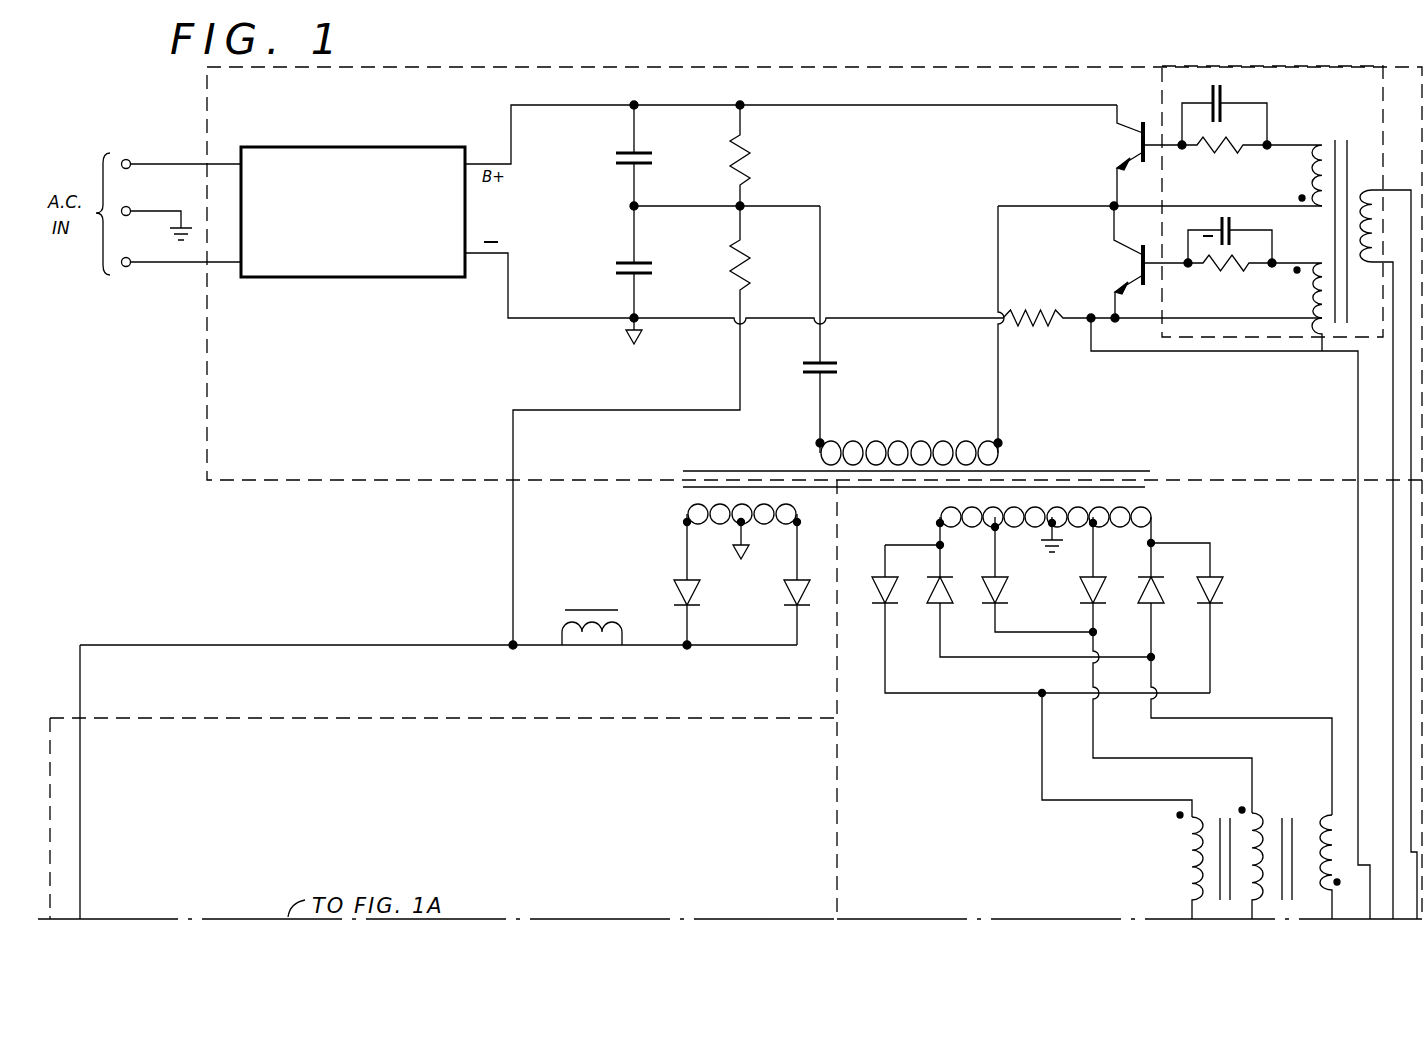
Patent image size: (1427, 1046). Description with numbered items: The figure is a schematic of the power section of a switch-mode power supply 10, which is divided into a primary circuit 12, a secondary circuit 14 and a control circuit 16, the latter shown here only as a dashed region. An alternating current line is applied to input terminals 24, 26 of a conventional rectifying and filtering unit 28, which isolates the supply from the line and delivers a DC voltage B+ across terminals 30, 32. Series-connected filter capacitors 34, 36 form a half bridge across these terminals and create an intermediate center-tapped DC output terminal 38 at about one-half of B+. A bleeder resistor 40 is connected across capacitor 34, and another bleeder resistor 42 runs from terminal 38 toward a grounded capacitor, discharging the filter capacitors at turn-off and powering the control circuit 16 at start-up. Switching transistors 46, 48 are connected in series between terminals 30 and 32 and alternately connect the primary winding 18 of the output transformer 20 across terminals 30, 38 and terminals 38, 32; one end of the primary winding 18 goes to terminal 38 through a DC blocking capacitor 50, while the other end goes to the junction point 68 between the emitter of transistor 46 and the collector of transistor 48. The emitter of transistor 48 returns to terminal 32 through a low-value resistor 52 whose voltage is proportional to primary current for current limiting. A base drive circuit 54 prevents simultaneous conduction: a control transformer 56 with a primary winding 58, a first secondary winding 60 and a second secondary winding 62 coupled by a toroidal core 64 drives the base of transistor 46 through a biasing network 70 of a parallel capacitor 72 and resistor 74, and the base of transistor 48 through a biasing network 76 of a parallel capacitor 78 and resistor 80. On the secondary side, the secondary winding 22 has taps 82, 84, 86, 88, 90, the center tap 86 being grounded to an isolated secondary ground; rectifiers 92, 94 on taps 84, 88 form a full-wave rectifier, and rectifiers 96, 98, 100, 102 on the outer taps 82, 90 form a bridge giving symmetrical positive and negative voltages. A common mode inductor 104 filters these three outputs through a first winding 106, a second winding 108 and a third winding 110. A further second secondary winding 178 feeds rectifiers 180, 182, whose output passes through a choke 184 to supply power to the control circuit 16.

The switch-mode power supply 10 is at (910, 60).
The primary circuit 12 is at (204, 383).
The secondary circuit 14 is at (829, 787).
The control circuit 16 is at (204, 716).
The primary winding 18 is at (1002, 456).
The output transformer 20 is at (1160, 450).
The secondary winding 22 is at (1154, 521).
The input terminal 24 is at (128, 158).
The input terminal 26 is at (130, 266).
The rectifying and filtering unit 28 is at (387, 138).
The terminal 30 is at (506, 110).
The terminal 32 is at (504, 312).
The filter capacitor 34 is at (612, 158).
The filter capacitor 36 is at (612, 268).
The intermediate DC output terminal 38 is at (628, 208).
The bleeder resistor 40 is at (756, 163).
The bleeder resistor 42 is at (756, 268).
The switching transistor 46 is at (1138, 148).
The switching transistor 48 is at (1138, 265).
The DC blocking capacitor 50 is at (842, 370).
The resistor 52 is at (1046, 332).
The base drive circuit 54 is at (1270, 64).
The control transformer 56 is at (1335, 100).
The primary winding 58 is at (1378, 188).
The first secondary winding 60 is at (1294, 160).
The second secondary winding 62 is at (1323, 342).
The toroidal core 64 is at (1337, 140).
The junction point 68 is at (1110, 212).
The biasing network 70 is at (1260, 101).
The capacitor 72 is at (1212, 85).
The resistor 74 is at (1240, 166).
The biasing network 76 is at (1242, 288).
The capacitor 78 is at (1230, 228).
The resistor 80 is at (1199, 276).
The tap 82 is at (937, 533).
The tap 84 is at (992, 545).
The center tap 86 is at (1042, 543).
The tap 88 is at (1090, 552).
The tap 90 is at (1148, 527).
The rectifier 92 is at (1005, 590).
The rectifier 94 is at (1078, 598).
The rectifier 96 is at (895, 590).
The rectifier 98 is at (950, 590).
The rectifier 100 is at (1145, 598).
The rectifier 102 is at (1220, 590).
The common mode inductor 104 is at (1177, 889).
The first winding 106 is at (1182, 862).
The second winding 108 is at (1236, 808).
The third winding 110 is at (1322, 812).
The second secondary winding 178 is at (684, 517).
The rectifier 180 is at (680, 582).
The rectifier 182 is at (792, 603).
The choke 184 is at (598, 610).